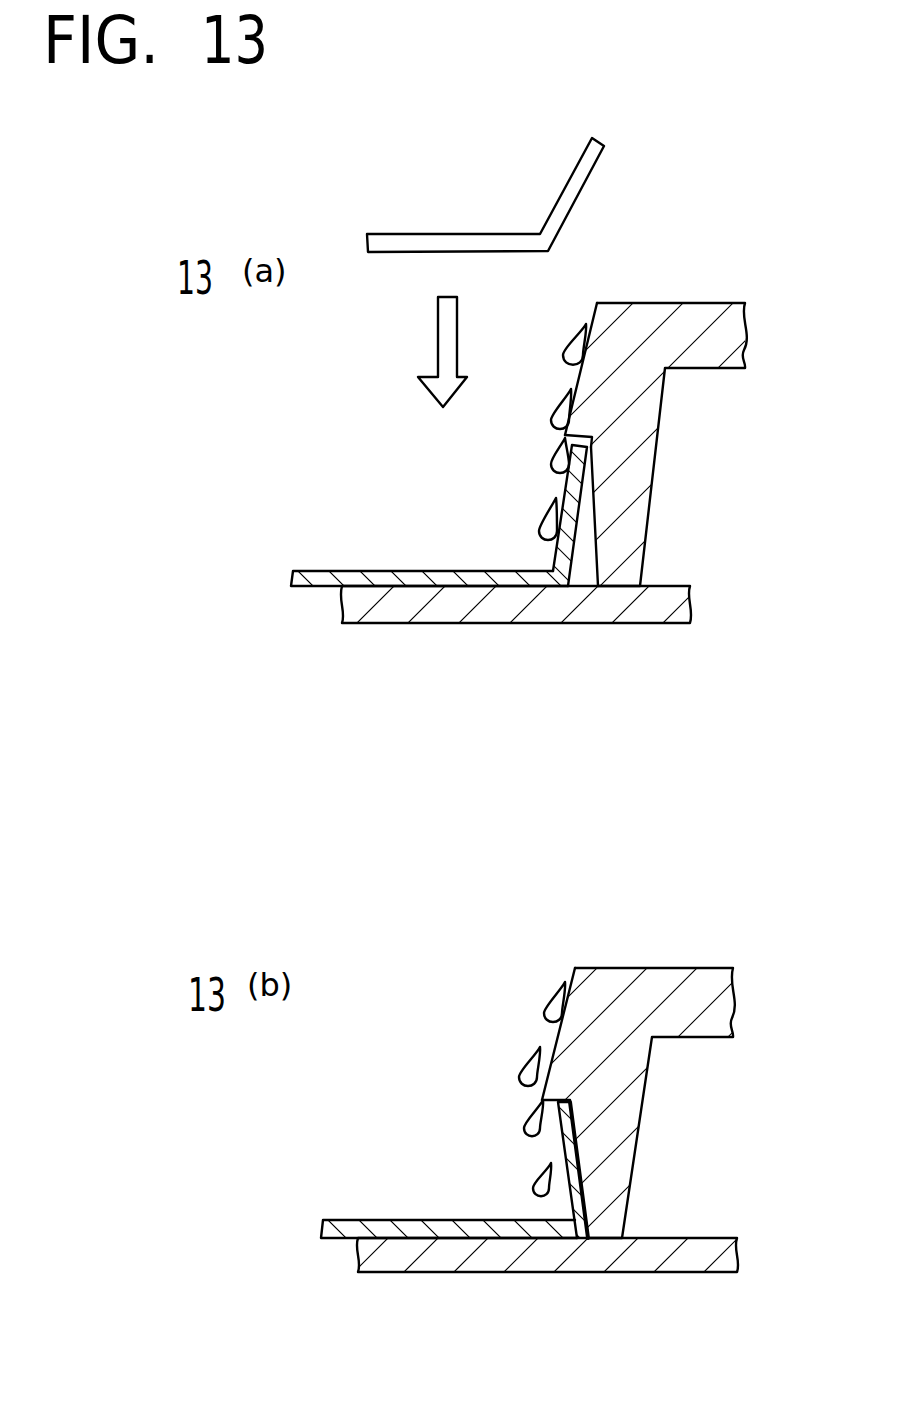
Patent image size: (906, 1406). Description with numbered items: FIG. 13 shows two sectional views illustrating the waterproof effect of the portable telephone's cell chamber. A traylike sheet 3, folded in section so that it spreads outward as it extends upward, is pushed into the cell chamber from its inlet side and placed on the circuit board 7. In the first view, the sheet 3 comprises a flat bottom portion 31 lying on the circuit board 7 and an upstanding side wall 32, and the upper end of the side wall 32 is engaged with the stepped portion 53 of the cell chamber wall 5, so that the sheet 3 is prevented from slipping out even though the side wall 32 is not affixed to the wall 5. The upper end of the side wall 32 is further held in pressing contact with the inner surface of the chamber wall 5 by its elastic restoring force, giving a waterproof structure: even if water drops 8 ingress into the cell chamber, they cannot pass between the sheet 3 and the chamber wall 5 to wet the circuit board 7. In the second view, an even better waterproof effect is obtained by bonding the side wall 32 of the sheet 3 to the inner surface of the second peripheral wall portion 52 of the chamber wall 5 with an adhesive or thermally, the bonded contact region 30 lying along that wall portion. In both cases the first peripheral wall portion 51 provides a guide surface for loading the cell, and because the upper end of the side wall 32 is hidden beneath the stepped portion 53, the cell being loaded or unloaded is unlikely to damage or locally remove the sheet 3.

The traylike sheet 3 is at (503, 231).
The horizontal flange of bracket 31 is at (493, 575).
The side wall 32 is at (569, 488).
The bent contact portion 30 is at (584, 1197).
The cell chamber wall 5 is at (631, 476).
The first peripheral wall portion 51 is at (596, 325).
The second peripheral wall portion 52 is at (601, 552).
The stepped portion 53 is at (560, 448).
The circuit board 7 is at (548, 610).
The water drops 8 is at (573, 350).